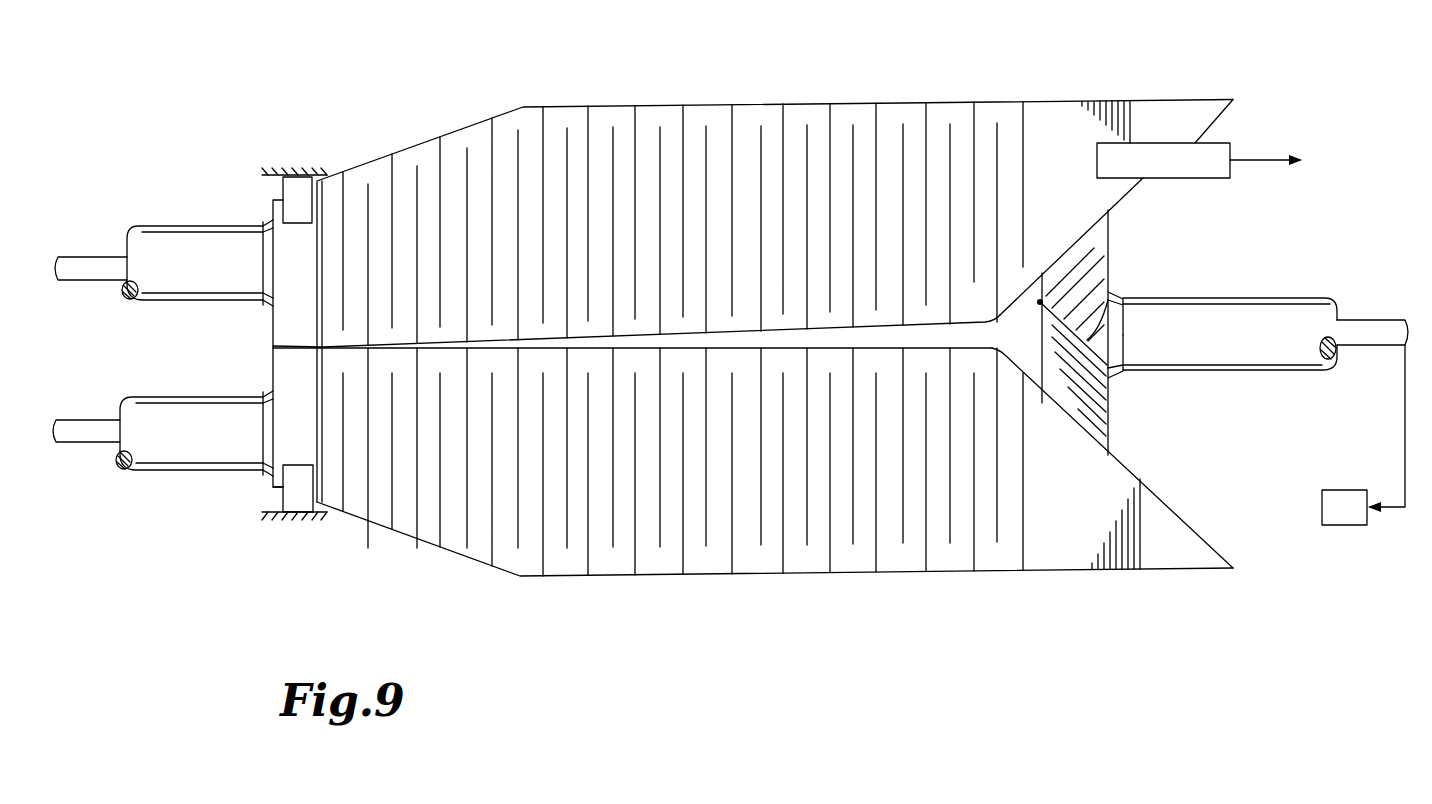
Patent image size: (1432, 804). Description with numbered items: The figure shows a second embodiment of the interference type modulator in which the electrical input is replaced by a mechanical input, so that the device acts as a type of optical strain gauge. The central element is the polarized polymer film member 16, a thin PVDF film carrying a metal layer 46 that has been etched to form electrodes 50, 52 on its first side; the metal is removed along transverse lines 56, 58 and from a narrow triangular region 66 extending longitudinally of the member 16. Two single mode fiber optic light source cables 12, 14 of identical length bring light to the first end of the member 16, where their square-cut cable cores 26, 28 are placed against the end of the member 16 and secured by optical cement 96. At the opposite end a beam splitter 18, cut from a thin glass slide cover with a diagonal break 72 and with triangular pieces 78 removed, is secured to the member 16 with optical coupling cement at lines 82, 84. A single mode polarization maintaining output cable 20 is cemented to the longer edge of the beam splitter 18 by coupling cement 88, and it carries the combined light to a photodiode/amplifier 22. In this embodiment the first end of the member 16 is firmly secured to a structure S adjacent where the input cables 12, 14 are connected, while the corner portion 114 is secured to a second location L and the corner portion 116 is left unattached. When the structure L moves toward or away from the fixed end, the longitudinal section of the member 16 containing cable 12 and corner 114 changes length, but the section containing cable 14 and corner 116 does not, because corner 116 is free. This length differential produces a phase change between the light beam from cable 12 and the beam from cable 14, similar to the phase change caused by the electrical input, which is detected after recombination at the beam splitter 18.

The fiber optic light source cable 12 is at (190, 245).
The fiber optic light source cable 14 is at (160, 455).
The polarized polymer film member 16 is at (570, 580).
The beam splitter 18 is at (1128, 262).
The polarization maintaining fiber optic cable 20 is at (1293, 355).
The photodiode/amplifier 22 is at (1361, 522).
The cable core 26 is at (80, 256).
The cable core 28 is at (83, 418).
The metal layer 46 is at (652, 118).
The electrode 50 is at (255, 205).
The electrode 52 is at (254, 500).
The transverse line 56 is at (393, 180).
The transverse line 58 is at (418, 196).
The narrow triangular region 66 is at (947, 335).
The diagonal break 72 is at (1120, 294).
The triangular piece 78 is at (1367, 318).
The cement line 82 is at (1133, 188).
The cement line 84 is at (1092, 440).
The coupling cement 88 is at (1140, 363).
The optical cement 96 is at (266, 412).
The corner portion 114 is at (1162, 114).
The corner portion 116 is at (1150, 555).
The second location / structure L is at (1222, 157).
The support S is at (292, 150).